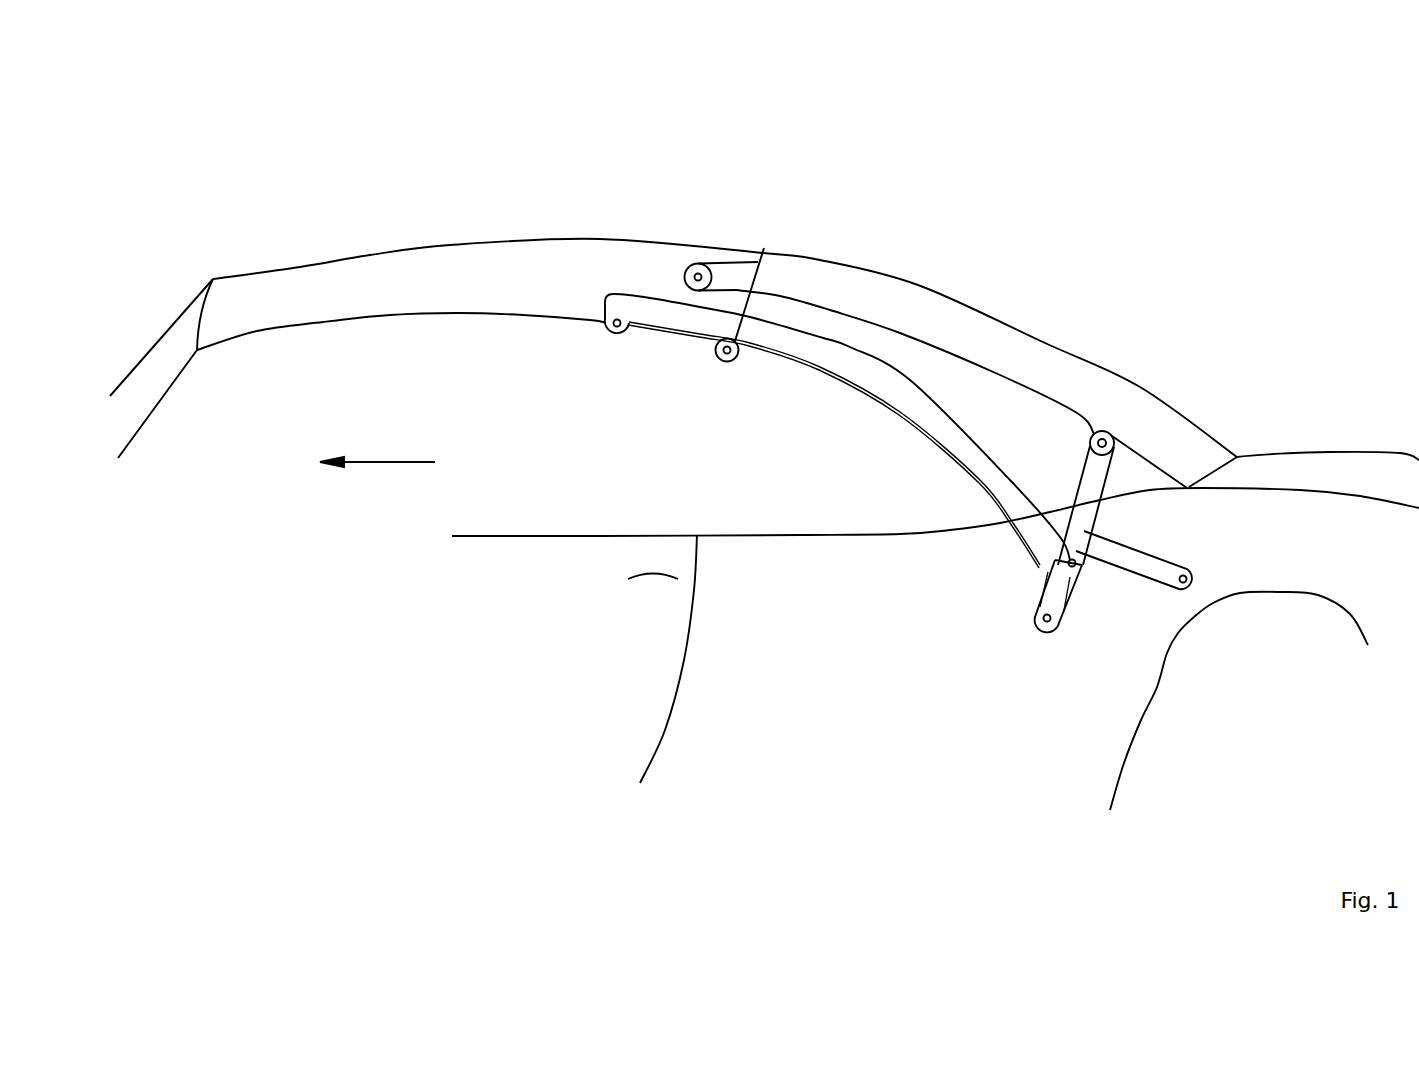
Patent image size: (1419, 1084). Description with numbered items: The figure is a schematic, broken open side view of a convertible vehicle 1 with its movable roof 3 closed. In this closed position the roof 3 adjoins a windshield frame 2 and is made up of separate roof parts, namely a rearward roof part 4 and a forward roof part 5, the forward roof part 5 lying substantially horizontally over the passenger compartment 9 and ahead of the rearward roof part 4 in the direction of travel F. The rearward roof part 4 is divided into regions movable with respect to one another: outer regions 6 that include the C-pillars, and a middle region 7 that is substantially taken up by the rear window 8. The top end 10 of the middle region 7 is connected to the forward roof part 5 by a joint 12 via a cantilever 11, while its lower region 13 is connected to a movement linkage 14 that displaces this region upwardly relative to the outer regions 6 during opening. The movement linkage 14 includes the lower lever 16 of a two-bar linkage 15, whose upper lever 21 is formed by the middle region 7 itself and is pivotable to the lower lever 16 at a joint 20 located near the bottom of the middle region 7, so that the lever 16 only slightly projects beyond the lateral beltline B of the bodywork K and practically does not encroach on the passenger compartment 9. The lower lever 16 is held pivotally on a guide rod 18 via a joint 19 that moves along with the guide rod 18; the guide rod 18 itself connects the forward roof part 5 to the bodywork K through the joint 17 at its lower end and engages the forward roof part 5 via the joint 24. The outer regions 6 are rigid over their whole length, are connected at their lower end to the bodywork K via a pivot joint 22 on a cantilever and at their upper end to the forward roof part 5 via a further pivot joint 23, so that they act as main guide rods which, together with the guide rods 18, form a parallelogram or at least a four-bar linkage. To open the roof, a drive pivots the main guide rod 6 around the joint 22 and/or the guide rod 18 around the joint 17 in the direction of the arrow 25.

The convertible vehicle 1 is at (1160, 180).
The windshield frame 2 is at (172, 345).
The movable roof 3 is at (849, 175).
The rearward roof part 4 is at (1047, 320).
The forward roof part 5 is at (461, 276).
The outer region 6 is at (977, 393).
The middle region 7 is at (958, 325).
The upper lever 21 is at (401, 331).
The rear window 8 is at (918, 287).
The passenger compartment 9 is at (693, 430).
The top end 10 is at (792, 249).
The cantilever 11 is at (734, 275).
The joint 12 is at (700, 274).
The lower region 13 is at (1073, 416).
The movement linkage 14 is at (1040, 474).
The two-bar linkage 15 is at (1150, 381).
The lower lever 16 is at (1083, 487).
The joint 17 is at (1075, 566).
The guide rod 18 is at (844, 381).
The joint 19 is at (1049, 620).
The joint 20 is at (1110, 432).
The pivot joint 22 is at (1183, 583).
The pivot joint 23 is at (730, 357).
The joint 24 is at (608, 338).
The arrow 25 is at (1072, 532).
The beltline B is at (1167, 484).
The direction of travel F is at (380, 462).
The bodywork K is at (769, 638).